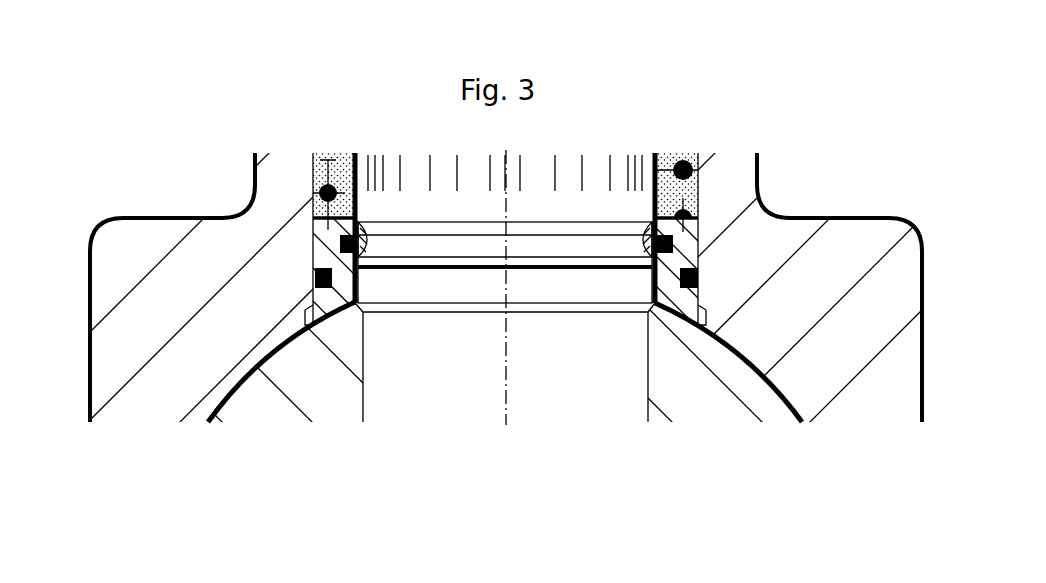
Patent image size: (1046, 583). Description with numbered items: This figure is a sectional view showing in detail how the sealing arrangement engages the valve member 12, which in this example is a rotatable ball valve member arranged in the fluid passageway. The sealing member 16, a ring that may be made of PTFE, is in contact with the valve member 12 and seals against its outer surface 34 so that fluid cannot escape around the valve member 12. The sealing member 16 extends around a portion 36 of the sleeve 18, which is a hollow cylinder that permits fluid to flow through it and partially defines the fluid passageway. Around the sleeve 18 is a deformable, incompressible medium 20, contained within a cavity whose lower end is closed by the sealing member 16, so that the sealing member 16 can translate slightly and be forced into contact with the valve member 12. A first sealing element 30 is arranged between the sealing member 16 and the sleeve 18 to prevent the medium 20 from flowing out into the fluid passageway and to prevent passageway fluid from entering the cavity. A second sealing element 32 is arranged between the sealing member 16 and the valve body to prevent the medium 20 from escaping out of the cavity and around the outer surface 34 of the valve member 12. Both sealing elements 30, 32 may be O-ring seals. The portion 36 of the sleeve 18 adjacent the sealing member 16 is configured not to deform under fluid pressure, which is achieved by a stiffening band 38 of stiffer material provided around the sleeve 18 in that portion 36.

The valve member 12 is at (723, 410).
The sealing member 16 is at (685, 298).
The sleeve 18 is at (452, 163).
The deformable, incompressible medium 20 is at (313, 157).
The first sealing element 30 is at (340, 243).
The second sealing element 32 is at (315, 275).
The outer surface 34 is at (658, 312).
The portion 36 is at (540, 240).
The stiffening band 38 is at (643, 230).